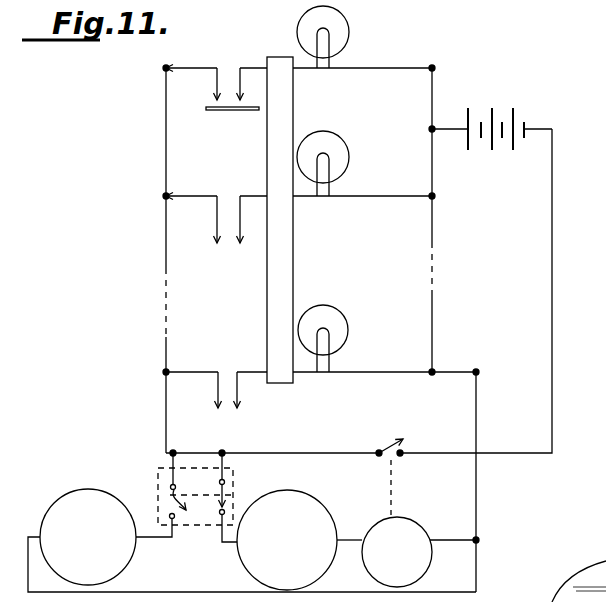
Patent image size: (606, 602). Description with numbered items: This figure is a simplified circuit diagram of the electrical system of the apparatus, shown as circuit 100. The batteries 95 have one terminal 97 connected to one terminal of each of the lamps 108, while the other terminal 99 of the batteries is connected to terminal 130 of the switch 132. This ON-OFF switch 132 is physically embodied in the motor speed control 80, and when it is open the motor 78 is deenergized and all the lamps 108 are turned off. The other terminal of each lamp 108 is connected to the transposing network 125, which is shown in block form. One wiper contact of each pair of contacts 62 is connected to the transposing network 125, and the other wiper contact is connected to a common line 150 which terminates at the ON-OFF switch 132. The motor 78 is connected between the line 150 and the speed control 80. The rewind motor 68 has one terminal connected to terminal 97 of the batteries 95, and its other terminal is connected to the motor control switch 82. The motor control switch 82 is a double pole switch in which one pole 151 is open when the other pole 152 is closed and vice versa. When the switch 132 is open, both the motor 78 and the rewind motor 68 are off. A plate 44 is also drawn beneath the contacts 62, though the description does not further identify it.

The transposing network 125 is at (276, 57).
The lamps 108 is at (348, 42).
The pairs of contacts 62 is at (240, 72).
The plate 44 is at (226, 111).
The terminal 97 is at (448, 128).
The batteries 95 is at (514, 112).
The other terminal 99 is at (536, 129).
The common line 150 is at (166, 224).
The circuit 100 is at (158, 280).
The pole 152 is at (225, 489).
The pole 151 is at (173, 522).
The rewind motor 68 is at (98, 491).
The motor control switch 82 is at (158, 495).
The motor 78 is at (340, 486).
The motor speed control 80 is at (424, 528).
The switch 132 is at (380, 452).
The terminal 130 is at (405, 447).